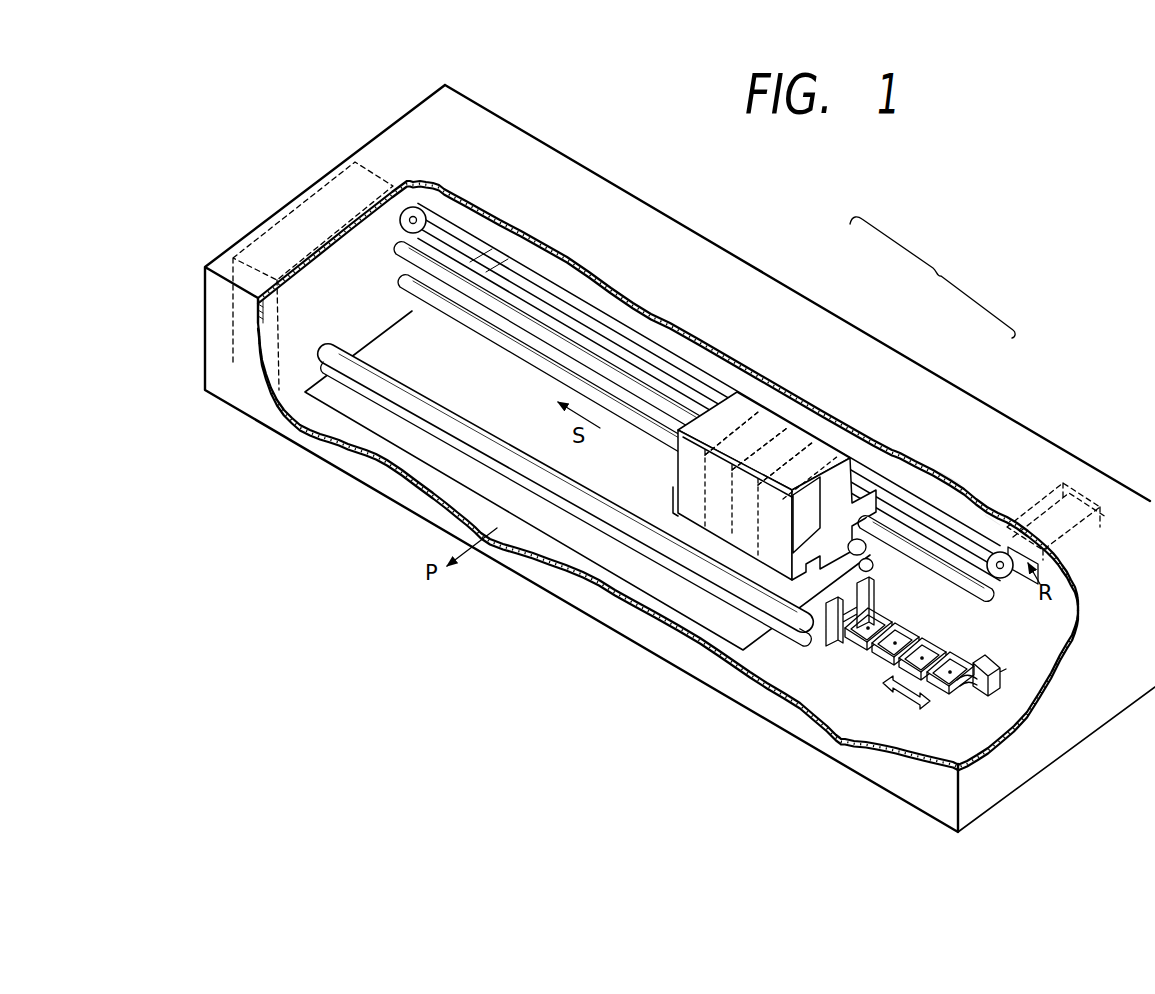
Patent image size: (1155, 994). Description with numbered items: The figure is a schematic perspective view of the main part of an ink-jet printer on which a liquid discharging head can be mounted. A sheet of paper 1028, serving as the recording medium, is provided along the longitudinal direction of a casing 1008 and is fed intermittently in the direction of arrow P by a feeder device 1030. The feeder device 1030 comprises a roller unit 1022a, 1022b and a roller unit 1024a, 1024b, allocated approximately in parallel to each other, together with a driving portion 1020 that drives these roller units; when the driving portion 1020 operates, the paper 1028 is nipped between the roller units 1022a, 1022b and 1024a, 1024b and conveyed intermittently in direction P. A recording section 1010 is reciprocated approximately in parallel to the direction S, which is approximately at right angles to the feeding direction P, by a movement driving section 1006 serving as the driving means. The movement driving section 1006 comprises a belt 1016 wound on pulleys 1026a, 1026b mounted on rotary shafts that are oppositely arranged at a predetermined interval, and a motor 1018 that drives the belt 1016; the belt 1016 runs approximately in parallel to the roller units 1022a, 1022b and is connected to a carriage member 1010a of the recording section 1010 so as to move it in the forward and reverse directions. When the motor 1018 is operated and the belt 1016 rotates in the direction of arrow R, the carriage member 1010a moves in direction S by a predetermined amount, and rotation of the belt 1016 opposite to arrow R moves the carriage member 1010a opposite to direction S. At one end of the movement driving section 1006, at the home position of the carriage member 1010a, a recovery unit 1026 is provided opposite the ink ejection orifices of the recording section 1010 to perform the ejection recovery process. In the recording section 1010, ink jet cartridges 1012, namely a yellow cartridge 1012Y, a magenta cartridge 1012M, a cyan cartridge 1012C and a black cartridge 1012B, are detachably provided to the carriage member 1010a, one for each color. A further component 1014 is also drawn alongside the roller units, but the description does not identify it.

The movement driving section 1006 is at (990, 526).
The casing 1008 is at (612, 178).
The recording section 1010 is at (704, 384).
The carriage member 1010a is at (826, 668).
The ink jet cartridges 1012 is at (860, 358).
The ink jet cartridge (yellow) 1012Y is at (740, 403).
The ink jet cartridge (magenta) 1012M is at (767, 418).
The ink jet cartridge (cyan) 1012C is at (793, 432).
The ink jet cartridge (black) 1012B is at (817, 450).
The conveying roller 1014 is at (933, 566).
The belt 1016 is at (951, 523).
The motor 1018 is at (1107, 474).
The driving portion 1020 is at (307, 187).
The roller unit 1022a is at (884, 536).
The roller unit 1022b is at (876, 530).
The roller unit 1024a is at (713, 572).
The roller unit 1024b is at (787, 637).
The recovery unit 1026 is at (700, 477).
The pulley 1026a is at (402, 210).
The pulley 1026b is at (999, 579).
The sheet of paper 1028 is at (365, 400).
The feeder device 1030 is at (807, 670).